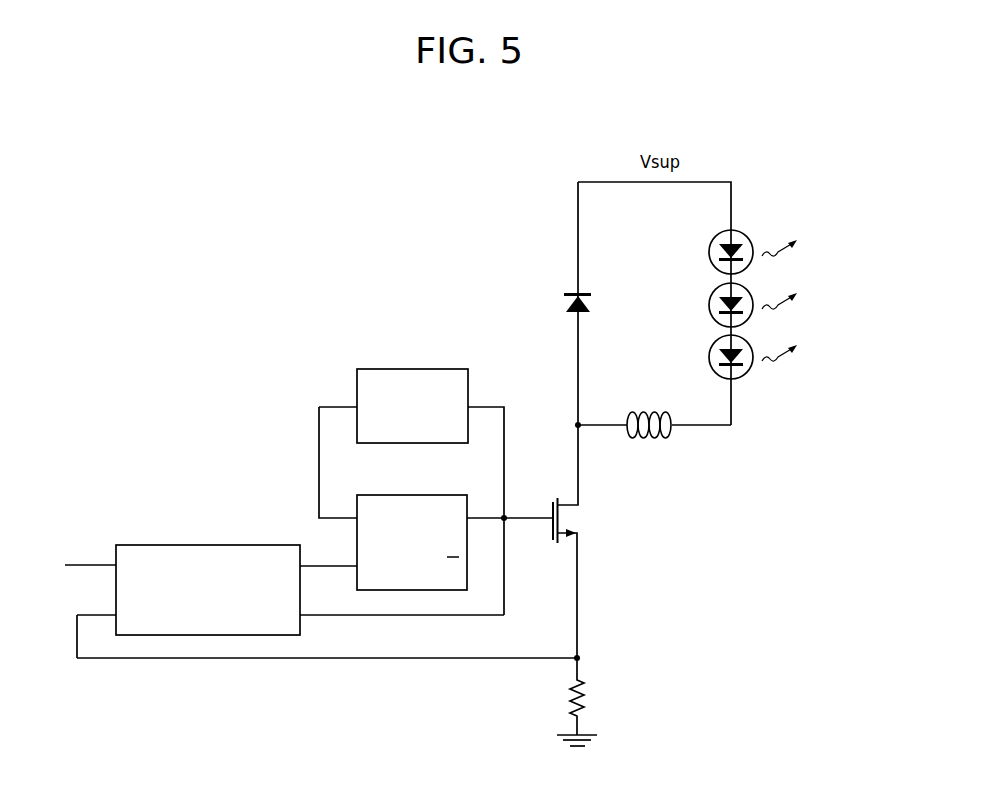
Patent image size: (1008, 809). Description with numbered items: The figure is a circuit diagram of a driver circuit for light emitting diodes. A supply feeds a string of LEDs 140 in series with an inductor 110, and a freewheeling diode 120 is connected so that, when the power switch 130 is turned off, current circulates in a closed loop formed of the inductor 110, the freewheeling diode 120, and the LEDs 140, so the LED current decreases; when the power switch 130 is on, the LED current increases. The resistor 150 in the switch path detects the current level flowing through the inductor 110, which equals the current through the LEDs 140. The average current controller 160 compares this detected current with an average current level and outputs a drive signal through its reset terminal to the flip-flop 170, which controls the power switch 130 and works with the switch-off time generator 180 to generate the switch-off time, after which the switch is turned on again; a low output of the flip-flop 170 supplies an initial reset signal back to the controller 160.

The inductor L 110 is at (673, 435).
The freewheeling diode DFW 120 is at (557, 307).
The power switch MSW 130 is at (582, 527).
The light emitting diodes (LEDs) 140 is at (805, 235).
The resistor Rcs 150 is at (563, 690).
The average current controller 160 is at (228, 637).
The flip-flop 170 is at (408, 582).
The switch-off time generator 180 is at (398, 375).